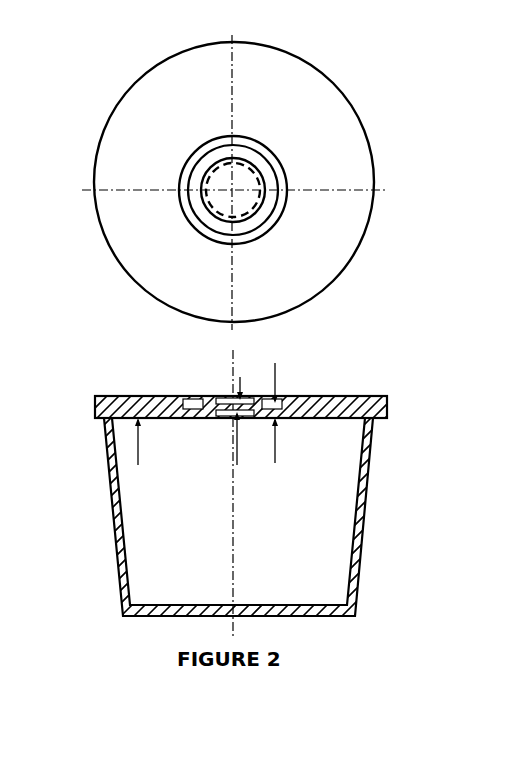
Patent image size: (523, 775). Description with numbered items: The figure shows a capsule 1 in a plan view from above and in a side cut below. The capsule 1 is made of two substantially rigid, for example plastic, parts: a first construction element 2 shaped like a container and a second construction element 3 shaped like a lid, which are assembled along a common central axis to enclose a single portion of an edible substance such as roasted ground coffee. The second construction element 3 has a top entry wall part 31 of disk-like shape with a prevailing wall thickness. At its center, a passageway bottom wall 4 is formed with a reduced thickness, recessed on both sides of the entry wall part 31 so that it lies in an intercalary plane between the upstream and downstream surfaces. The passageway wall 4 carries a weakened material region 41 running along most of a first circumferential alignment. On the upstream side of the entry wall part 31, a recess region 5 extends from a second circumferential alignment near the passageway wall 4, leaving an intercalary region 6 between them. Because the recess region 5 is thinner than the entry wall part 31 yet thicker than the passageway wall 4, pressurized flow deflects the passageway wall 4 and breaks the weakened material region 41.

The capsule 1 is at (261, 339).
The first construction element 2 is at (261, 517).
The second construction element 3 is at (233, 230).
The entry wall part 31 is at (138, 396).
The passageway bottom wall 4 is at (240, 189).
The weakened material region 41 is at (207, 178).
The recess region 5 is at (287, 176).
The intercalary region 6 is at (257, 217).